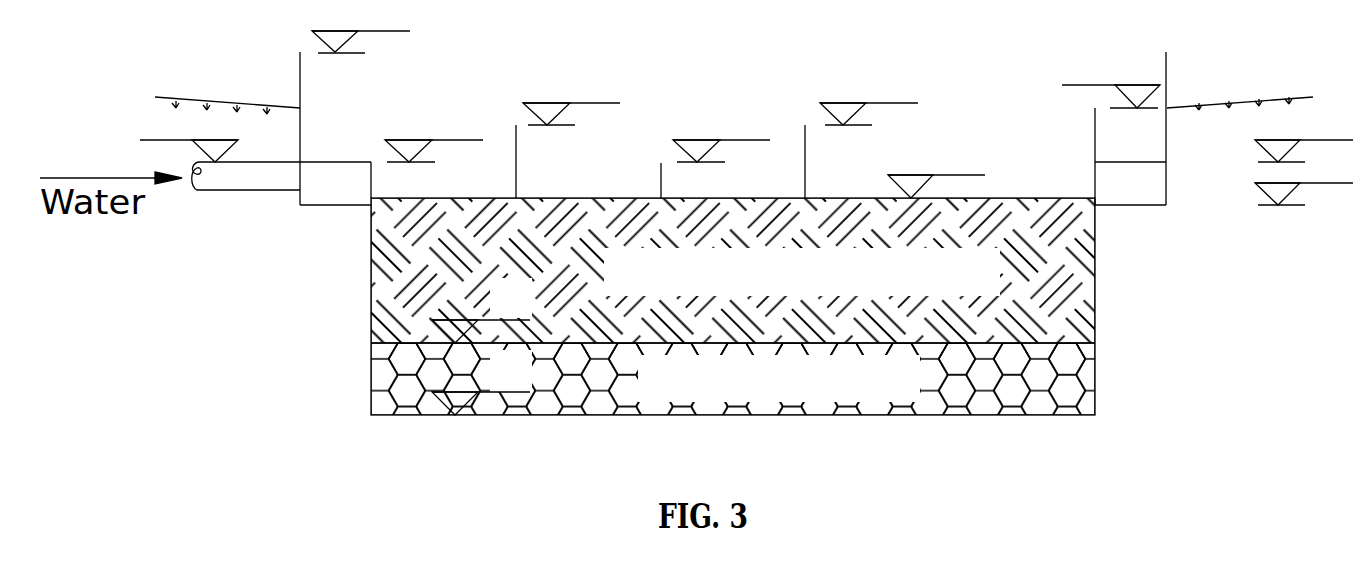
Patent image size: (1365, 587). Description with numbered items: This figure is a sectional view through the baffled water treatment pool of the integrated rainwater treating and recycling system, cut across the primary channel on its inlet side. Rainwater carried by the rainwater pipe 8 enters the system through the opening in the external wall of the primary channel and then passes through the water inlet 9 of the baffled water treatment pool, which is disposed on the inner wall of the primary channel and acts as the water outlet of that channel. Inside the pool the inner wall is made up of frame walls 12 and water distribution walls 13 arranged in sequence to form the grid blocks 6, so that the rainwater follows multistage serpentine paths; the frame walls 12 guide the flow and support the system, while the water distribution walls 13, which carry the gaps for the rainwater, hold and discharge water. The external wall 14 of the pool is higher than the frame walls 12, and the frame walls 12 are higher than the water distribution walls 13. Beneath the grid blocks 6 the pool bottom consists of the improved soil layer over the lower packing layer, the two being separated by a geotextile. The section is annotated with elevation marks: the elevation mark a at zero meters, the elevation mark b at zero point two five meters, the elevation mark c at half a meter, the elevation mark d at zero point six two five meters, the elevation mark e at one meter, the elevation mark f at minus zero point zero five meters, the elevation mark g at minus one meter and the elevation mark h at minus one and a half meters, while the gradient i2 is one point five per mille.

The grid blocks 6 is at (1000, 198).
The rainwater pipe 8 is at (270, 182).
The water inlet 9 is at (370, 160).
The frame walls 12 is at (802, 135).
The water distribution walls 13 is at (655, 177).
The external wall 14 is at (1093, 120).
The elevation mark a is at (936, 164).
The elevation mark b is at (745, 128).
The elevation mark c is at (720, 92).
The elevation mark d is at (1111, 71).
The elevation mark e is at (361, 26).
The elevation mark f is at (1304, 172).
The elevation mark g is at (482, 310).
The elevation mark h is at (482, 382).
The gradient i2 is at (190, 70).